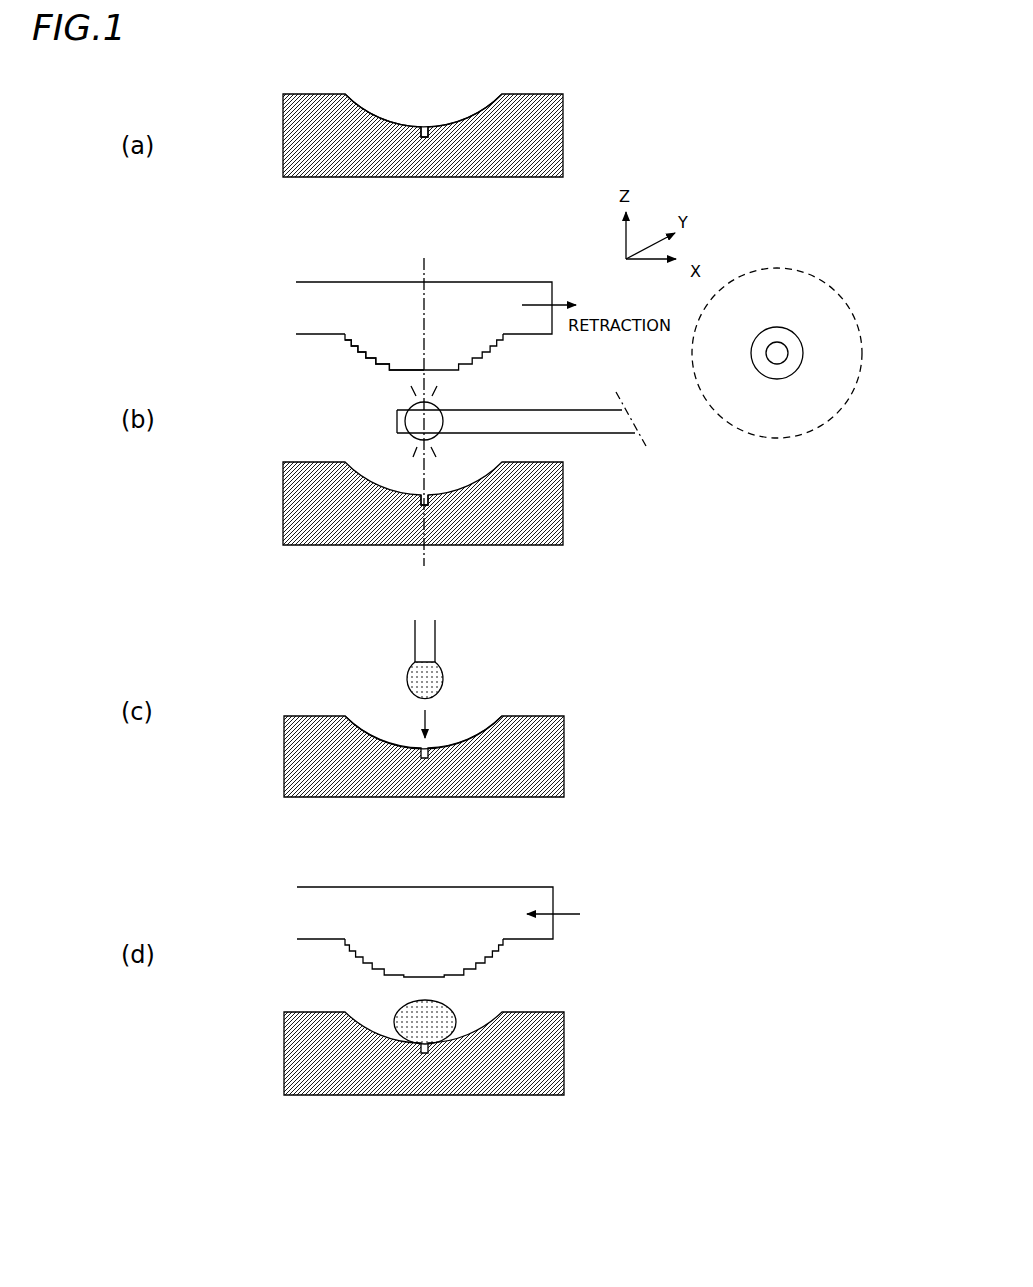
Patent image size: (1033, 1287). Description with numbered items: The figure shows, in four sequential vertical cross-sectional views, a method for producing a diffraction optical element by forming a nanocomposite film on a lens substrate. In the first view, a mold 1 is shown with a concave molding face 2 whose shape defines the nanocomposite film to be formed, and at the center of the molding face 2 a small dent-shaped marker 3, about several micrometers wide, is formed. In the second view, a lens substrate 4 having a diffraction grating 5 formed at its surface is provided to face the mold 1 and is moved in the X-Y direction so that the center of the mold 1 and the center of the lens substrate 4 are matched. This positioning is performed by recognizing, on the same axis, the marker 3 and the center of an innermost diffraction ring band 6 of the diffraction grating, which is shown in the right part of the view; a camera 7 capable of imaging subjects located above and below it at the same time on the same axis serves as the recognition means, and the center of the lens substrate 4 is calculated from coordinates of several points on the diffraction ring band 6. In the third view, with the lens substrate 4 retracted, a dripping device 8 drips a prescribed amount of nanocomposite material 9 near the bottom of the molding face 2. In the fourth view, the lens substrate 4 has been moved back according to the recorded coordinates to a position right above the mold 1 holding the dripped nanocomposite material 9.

The mold 1 is at (307, 131).
The molding face 2 is at (359, 101).
The marker 3 is at (466, 331).
The lens substrate 4 is at (306, 306).
The diffraction grating 5 is at (401, 382).
The innermost diffraction ring band 6 is at (777, 343).
The camera 7 is at (530, 418).
The dripping device 8 is at (423, 638).
The nanocomposite material 9 is at (432, 682).